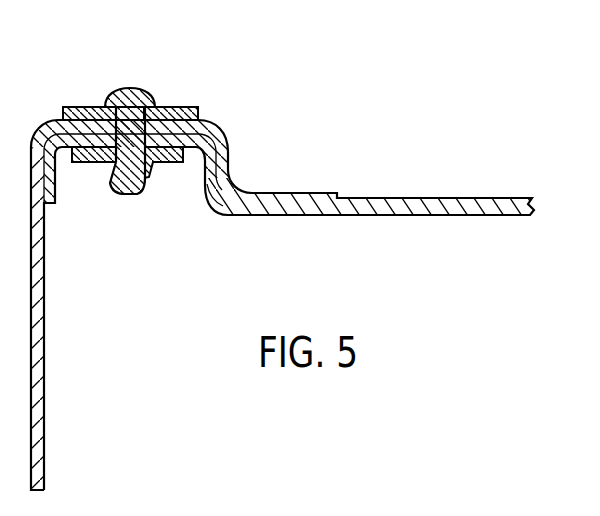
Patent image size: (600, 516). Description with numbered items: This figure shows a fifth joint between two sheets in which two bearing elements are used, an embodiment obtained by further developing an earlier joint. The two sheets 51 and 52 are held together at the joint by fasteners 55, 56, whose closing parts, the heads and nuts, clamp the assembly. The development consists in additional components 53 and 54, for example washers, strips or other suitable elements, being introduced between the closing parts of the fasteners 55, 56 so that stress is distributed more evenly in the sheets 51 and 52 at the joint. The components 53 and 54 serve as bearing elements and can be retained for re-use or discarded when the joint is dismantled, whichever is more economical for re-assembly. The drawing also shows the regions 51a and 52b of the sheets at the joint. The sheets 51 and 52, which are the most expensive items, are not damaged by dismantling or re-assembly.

The sheet 51 is at (45, 364).
The flange of first panel 51a is at (73, 127).
The sheet 52 is at (479, 197).
The spacer flange of second panel 52b is at (87, 163).
The additional component 53 is at (192, 107).
The additional component 54 is at (177, 163).
The fastener 55 is at (121, 87).
The fastener 56 is at (116, 195).